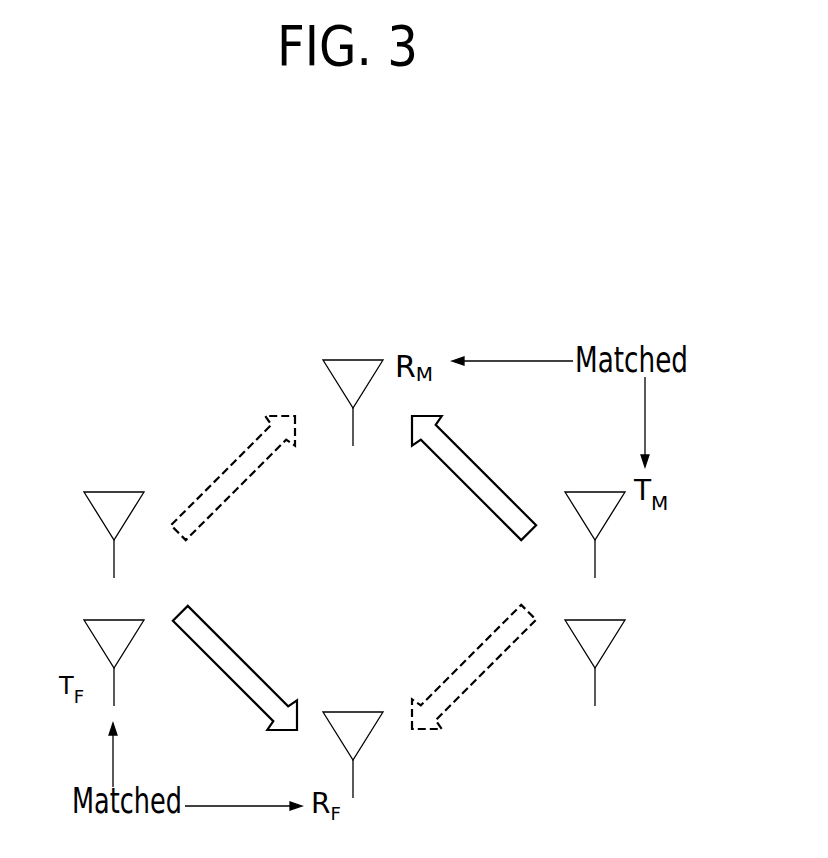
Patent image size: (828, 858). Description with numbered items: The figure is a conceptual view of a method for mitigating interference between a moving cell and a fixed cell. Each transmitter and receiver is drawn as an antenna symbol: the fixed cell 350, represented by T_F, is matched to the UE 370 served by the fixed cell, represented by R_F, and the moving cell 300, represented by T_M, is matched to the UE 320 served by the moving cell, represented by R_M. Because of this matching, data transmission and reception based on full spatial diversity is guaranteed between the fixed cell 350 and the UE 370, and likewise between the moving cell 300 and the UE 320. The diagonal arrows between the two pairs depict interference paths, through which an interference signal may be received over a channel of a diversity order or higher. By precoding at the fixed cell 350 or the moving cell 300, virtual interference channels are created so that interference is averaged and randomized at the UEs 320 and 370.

The moving cell 300 is at (608, 518).
The UE served by the moving cell 320 is at (352, 360).
The fixed cell 350 is at (97, 618).
The UE served by the fixed cell 370 is at (352, 712).